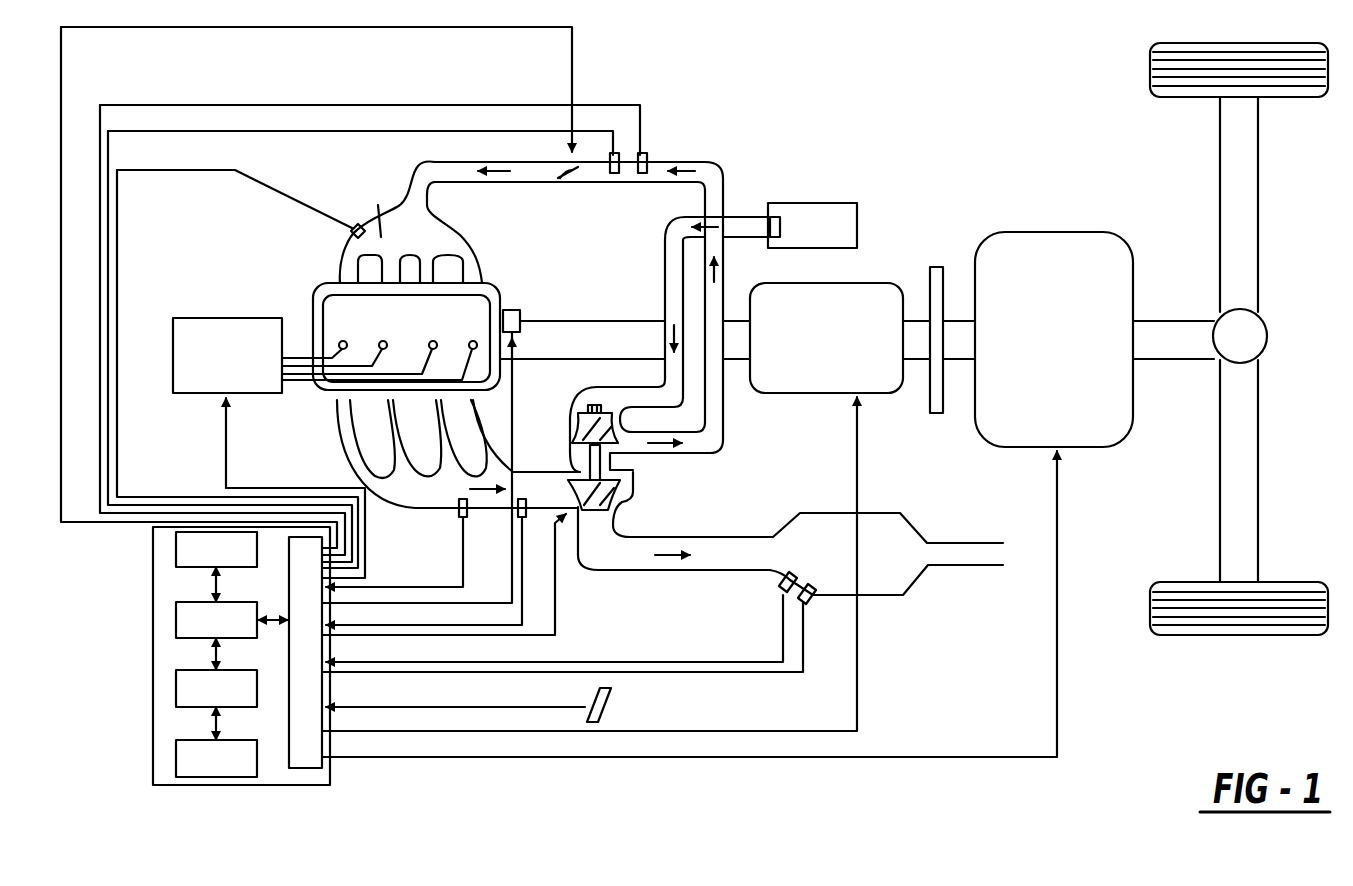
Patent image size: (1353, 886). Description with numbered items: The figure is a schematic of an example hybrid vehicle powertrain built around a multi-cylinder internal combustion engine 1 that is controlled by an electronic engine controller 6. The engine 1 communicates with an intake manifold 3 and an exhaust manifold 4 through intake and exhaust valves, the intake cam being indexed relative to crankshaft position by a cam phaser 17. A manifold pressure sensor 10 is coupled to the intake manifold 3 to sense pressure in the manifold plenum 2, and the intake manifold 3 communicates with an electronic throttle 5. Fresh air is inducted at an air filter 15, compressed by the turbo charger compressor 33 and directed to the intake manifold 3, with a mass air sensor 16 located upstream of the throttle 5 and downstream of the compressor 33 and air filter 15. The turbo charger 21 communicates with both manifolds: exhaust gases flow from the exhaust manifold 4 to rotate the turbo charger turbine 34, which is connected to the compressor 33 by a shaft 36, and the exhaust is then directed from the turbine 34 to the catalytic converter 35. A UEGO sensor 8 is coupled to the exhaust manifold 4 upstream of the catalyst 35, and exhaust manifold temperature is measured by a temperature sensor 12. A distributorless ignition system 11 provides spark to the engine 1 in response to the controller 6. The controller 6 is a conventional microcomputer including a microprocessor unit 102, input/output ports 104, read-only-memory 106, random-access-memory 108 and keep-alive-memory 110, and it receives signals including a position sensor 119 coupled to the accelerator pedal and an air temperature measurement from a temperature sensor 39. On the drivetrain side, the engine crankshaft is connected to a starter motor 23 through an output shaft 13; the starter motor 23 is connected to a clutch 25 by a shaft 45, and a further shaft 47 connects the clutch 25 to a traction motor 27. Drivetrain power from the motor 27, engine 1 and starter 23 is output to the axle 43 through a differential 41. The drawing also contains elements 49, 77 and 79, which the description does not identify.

The internal combustion engine 1 is at (312, 290).
The manifold plenum 2 is at (378, 198).
The intake manifold 3 is at (468, 237).
The exhaust manifold 4 is at (337, 418).
The electronic throttle 5 is at (581, 183).
The electronic engine controller 6 is at (198, 699).
The UEGO sensor 8 is at (527, 517).
The manifold pressure sensor 10 is at (351, 232).
The distributorless ignition system 11 is at (218, 318).
The temperature sensor 12 is at (460, 512).
The output shaft 13 is at (593, 360).
The air filter 15 is at (807, 203).
The mass air sensor 16 is at (644, 153).
The cam phaser 17 is at (527, 305).
The turbo charger 21 is at (619, 381).
The starter motor 23 is at (815, 393).
The clutch 25 is at (937, 413).
The traction motor 27 is at (1078, 447).
The turbo charger compressor 33 is at (572, 423).
The turbo charger turbine 34 is at (626, 500).
The catalytic converter 35 is at (880, 595).
The shaft 36 is at (580, 463).
The temperature sensor 39 is at (614, 153).
The differential 41 is at (1267, 337).
The axle 43 is at (1258, 455).
The shaft 45 is at (918, 359).
The shaft 47 is at (958, 359).
The output shaft 49 is at (1160, 360).
The oxygen sensor 77 is at (780, 584).
The oxygen sensor 79 is at (813, 603).
The microprocessor unit 102 is at (176, 621).
The input/output ports 104 is at (305, 768).
The read-only-memory 106 is at (176, 691).
The random-access-memory 108 is at (176, 548).
The keep-alive-memory 110 is at (176, 762).
The position sensor 119 is at (641, 702).